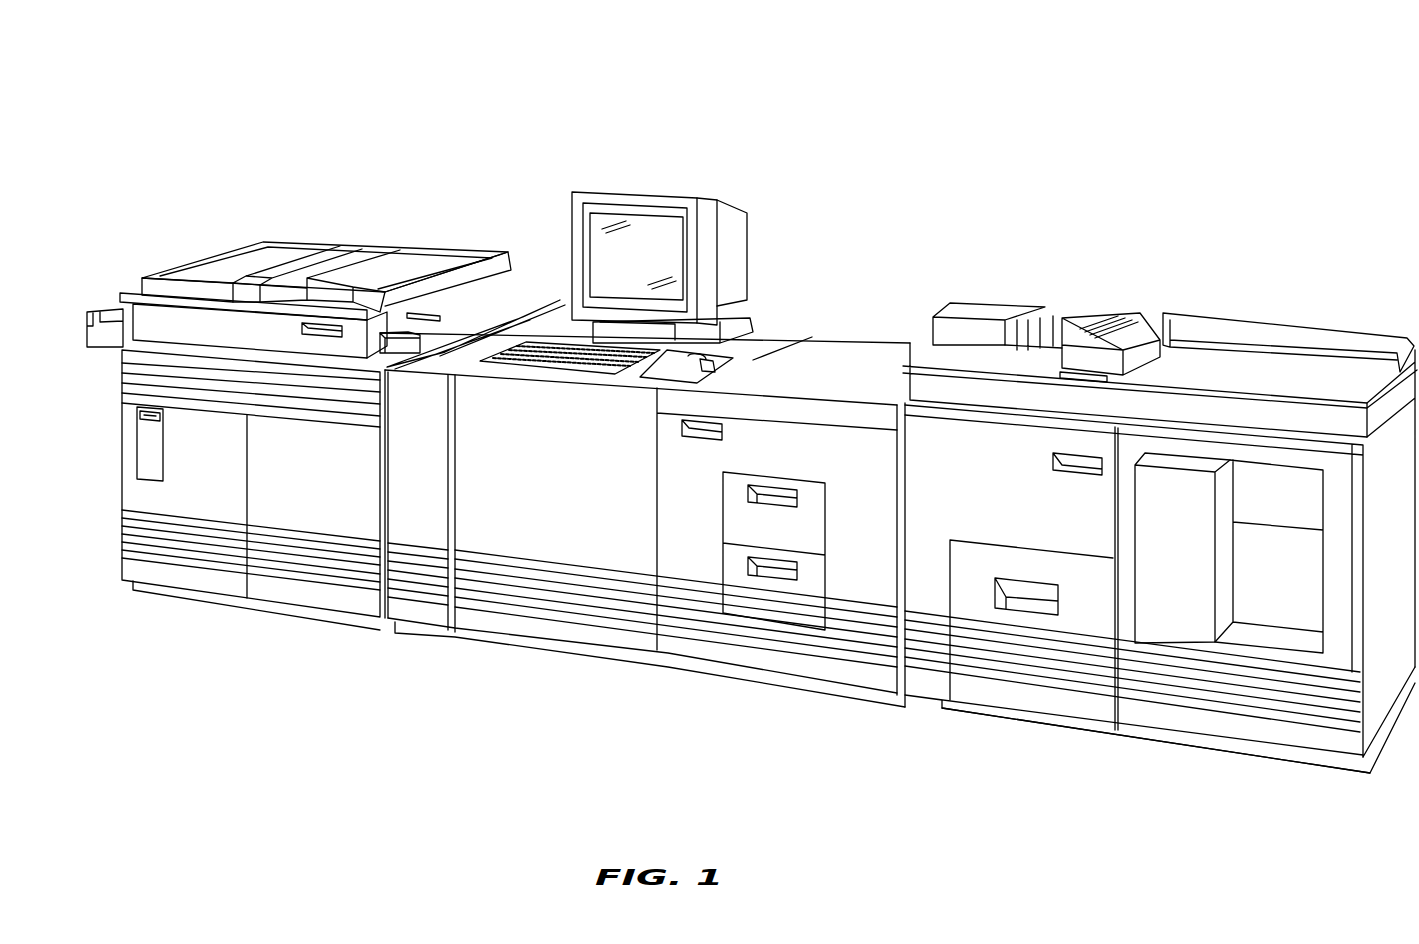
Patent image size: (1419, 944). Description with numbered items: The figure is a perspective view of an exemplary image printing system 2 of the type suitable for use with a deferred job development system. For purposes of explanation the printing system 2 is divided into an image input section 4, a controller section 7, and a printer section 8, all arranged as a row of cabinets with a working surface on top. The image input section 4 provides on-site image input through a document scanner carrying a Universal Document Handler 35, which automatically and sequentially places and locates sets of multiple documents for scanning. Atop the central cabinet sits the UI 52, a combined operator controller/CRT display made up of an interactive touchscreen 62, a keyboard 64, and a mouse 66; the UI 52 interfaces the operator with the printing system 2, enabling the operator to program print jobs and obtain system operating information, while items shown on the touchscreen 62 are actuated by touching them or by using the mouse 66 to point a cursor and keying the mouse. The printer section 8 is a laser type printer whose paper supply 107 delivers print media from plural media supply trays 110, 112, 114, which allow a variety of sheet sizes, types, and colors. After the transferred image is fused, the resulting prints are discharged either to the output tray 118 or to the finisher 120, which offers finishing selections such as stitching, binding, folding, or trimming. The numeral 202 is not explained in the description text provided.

The image printing system 2 is at (837, 98).
The image input section 4 is at (368, 224).
The controller section 7 is at (112, 489).
The printer section 8 is at (867, 264).
The Universal Document Handler 35 is at (232, 270).
The UI 52 is at (667, 186).
The interactive touchscreen 62 is at (602, 262).
The keyboard 64 is at (562, 370).
The mouse 66 is at (658, 381).
The paper supply 107 is at (838, 558).
The media supply tray 110 is at (978, 543).
The media supply tray 112 is at (789, 478).
The media supply tray 114 is at (722, 561).
The output tray 118 is at (1104, 303).
The finisher 120 is at (1205, 727).
The work surface / shelf 202 is at (495, 367).